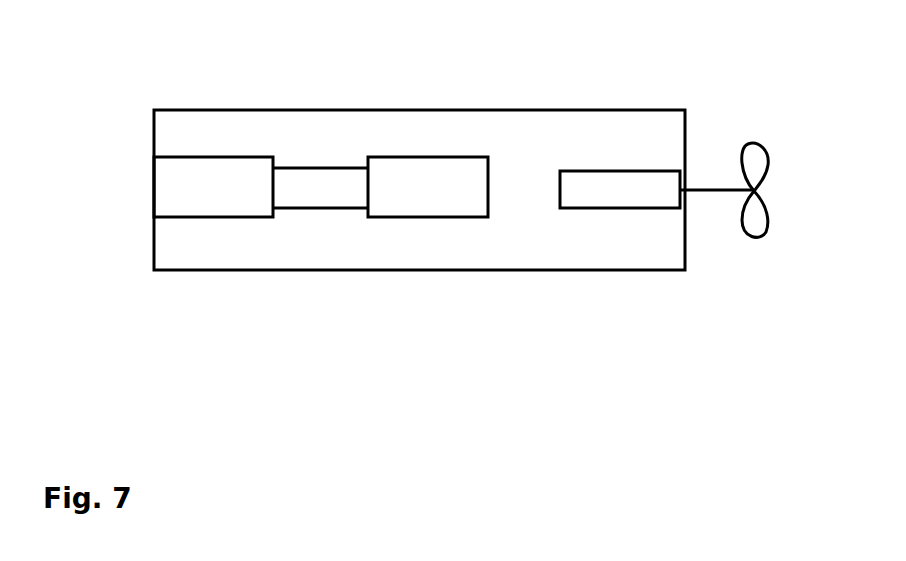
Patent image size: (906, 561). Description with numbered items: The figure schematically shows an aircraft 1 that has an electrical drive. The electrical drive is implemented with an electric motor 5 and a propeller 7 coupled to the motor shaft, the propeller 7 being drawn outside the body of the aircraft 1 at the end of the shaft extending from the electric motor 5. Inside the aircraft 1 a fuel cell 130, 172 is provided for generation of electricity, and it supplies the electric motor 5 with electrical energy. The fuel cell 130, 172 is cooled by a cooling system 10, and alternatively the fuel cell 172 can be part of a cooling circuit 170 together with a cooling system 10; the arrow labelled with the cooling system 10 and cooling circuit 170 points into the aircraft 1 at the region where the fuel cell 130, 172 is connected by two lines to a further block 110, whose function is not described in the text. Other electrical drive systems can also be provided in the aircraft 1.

The aircraft 1 is at (121, 74).
The cooling system 10 is at (316, 117).
The cooling circuit 170 is at (314, 141).
The energy store 110 is at (220, 192).
The fuel cell 130 is at (427, 293).
The fuel cell 172 is at (417, 195).
The electric motor 5 is at (620, 195).
The propeller 7 is at (753, 219).